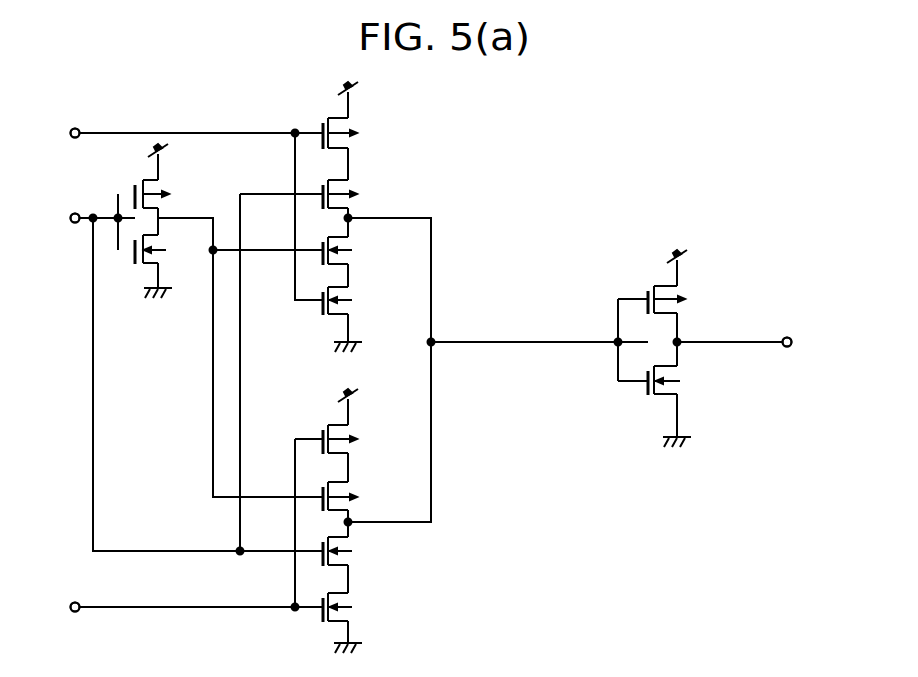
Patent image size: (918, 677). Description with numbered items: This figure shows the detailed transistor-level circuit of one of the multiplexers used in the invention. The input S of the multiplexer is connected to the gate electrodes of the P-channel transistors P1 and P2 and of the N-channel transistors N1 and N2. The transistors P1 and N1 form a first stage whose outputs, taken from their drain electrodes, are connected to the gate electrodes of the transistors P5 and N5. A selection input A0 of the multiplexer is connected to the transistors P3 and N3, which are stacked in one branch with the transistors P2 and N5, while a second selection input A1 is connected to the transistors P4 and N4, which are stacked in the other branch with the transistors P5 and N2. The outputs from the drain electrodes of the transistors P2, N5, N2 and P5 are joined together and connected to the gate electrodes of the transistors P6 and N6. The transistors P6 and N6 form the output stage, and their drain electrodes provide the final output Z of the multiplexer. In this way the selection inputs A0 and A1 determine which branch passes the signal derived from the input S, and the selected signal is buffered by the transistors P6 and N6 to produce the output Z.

The P-channel transistor P1 is at (138, 176).
The N-channel transistor N1 is at (141, 254).
The transistor P3 is at (325, 115).
The P-channel transistor P2 is at (327, 178).
The transistor N5 is at (305, 236).
The transistor N3 is at (325, 308).
The transistor P4 is at (323, 421).
The transistor P5 is at (307, 482).
The N-channel transistor N2 is at (305, 538).
The transistor N4 is at (319, 609).
The transistor P6 is at (650, 296).
The transistor N6 is at (654, 394).
The selection input A0 is at (51, 133).
The selection input A1 is at (55, 608).
The input S is at (61, 219).
The final output Z is at (799, 342).